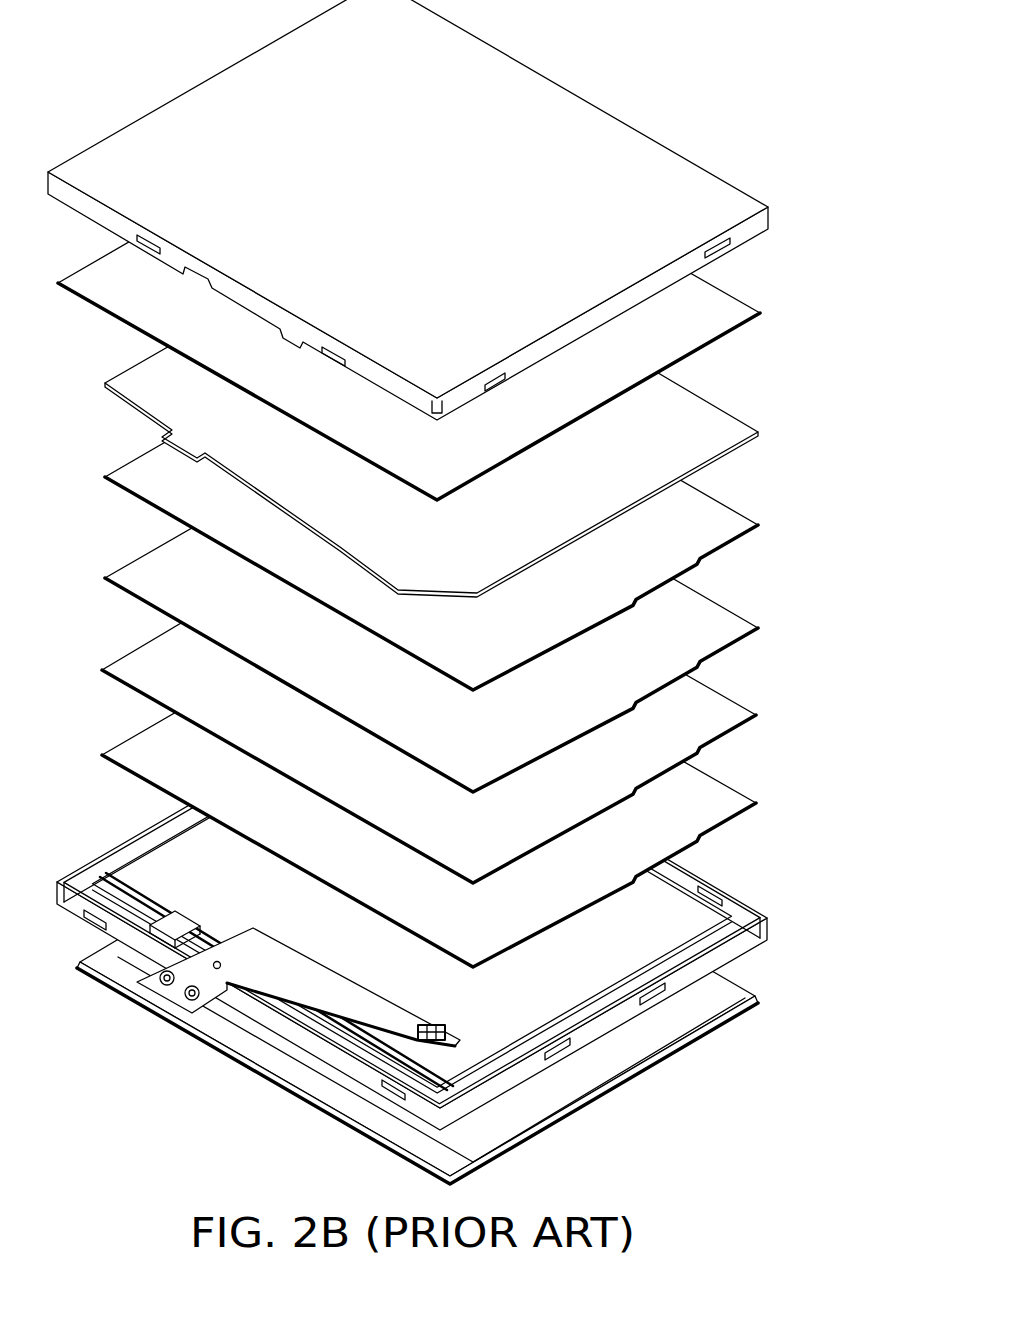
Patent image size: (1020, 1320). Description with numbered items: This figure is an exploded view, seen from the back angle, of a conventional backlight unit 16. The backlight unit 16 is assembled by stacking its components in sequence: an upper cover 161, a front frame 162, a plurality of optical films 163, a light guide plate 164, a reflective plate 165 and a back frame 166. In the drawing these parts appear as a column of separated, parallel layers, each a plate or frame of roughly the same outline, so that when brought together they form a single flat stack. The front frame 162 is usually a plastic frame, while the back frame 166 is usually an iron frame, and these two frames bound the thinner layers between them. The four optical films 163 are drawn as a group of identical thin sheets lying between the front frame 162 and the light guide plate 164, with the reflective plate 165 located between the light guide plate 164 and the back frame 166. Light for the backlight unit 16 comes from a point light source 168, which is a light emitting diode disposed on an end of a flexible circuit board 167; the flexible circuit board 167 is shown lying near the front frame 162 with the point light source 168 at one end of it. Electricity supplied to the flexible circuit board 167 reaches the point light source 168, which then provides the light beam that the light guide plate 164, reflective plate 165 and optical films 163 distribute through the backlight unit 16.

The backlight unit 16 is at (159, 33).
The upper cover 161 is at (757, 1001).
The front frame 162 is at (766, 917).
The optical films 163 is at (757, 802).
The light guide plate 164 is at (758, 431).
The reflective plate 165 is at (761, 312).
The back frame 166 is at (767, 206).
The flexible circuit board 167 is at (249, 940).
The point light source 168 is at (441, 1028).